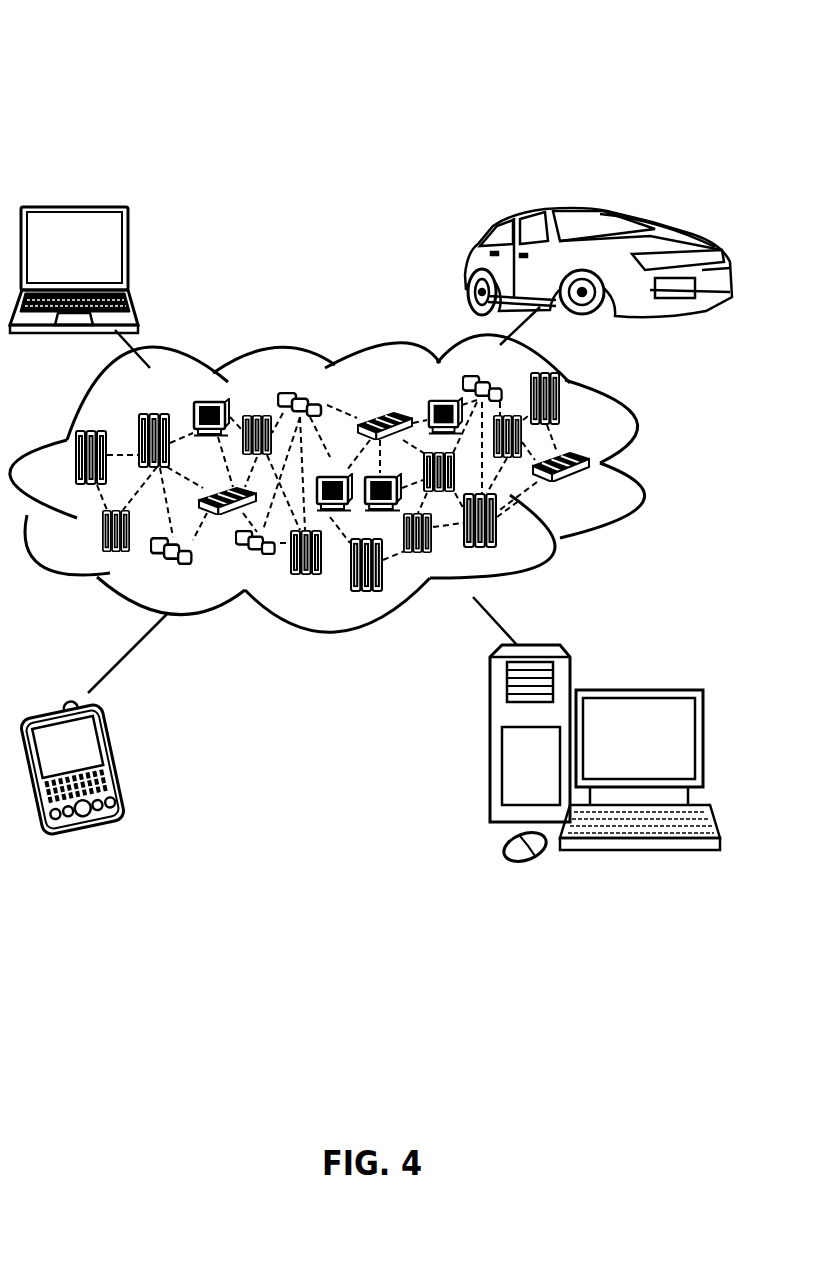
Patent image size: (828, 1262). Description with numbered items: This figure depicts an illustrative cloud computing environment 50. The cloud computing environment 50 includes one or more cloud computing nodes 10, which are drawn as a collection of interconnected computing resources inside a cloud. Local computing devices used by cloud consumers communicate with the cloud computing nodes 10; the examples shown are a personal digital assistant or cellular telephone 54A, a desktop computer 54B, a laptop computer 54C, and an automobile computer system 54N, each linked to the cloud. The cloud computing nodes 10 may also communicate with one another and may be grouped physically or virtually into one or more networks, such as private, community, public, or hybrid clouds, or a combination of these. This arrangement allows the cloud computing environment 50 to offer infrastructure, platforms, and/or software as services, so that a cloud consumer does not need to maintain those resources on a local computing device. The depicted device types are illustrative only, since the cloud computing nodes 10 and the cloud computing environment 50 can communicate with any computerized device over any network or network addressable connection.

The cloud computing environment 50 is at (263, 58).
The cloud computing nodes 10 is at (600, 491).
The personal digital assistant or cellular telephone 54A is at (123, 761).
The desktop computer 54B is at (642, 690).
The laptop computer 54C is at (128, 256).
The automobile computer system 54N is at (470, 267).